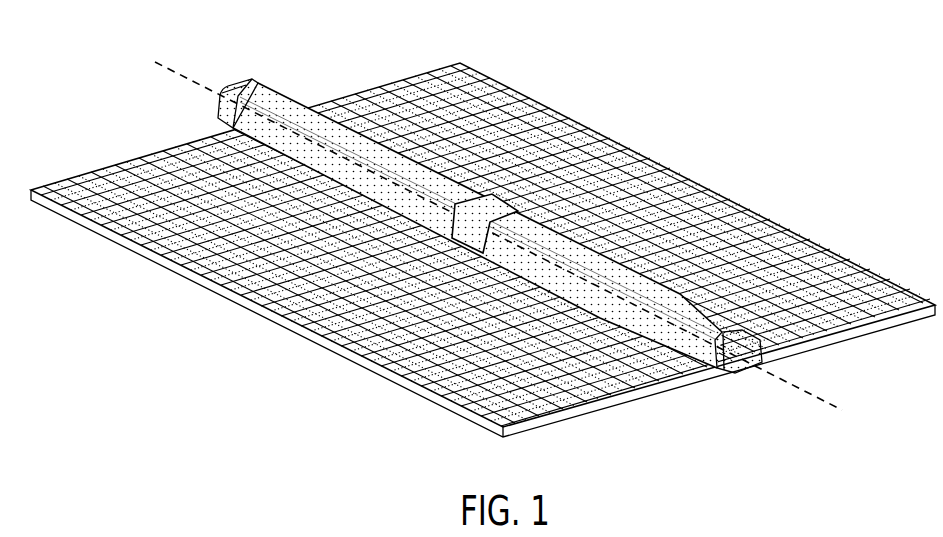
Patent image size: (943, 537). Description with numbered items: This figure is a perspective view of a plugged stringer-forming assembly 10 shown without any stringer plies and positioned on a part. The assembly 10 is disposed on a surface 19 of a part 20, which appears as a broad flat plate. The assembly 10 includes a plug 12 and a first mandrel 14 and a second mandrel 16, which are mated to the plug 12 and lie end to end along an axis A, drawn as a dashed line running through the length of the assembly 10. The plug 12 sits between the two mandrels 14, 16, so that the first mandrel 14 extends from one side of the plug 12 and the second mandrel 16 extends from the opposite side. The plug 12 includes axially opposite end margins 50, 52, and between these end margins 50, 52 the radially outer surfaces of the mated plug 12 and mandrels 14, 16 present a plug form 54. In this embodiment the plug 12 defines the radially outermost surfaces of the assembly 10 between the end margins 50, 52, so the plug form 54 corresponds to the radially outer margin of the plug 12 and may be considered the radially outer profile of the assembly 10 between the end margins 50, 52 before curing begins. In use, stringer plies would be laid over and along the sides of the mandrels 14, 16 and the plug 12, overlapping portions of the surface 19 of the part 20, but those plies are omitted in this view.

The plugged stringer-forming assembly 10 is at (204, 102).
The plug 12 is at (484, 232).
The first mandrel 14 is at (285, 90).
The second mandrel 16 is at (688, 346).
The surface 19 is at (768, 243).
The part 20 is at (64, 222).
The end margin 50 is at (484, 227).
The end margin 52 is at (484, 256).
The plug form 54 is at (456, 258).
The axis A is at (825, 398).